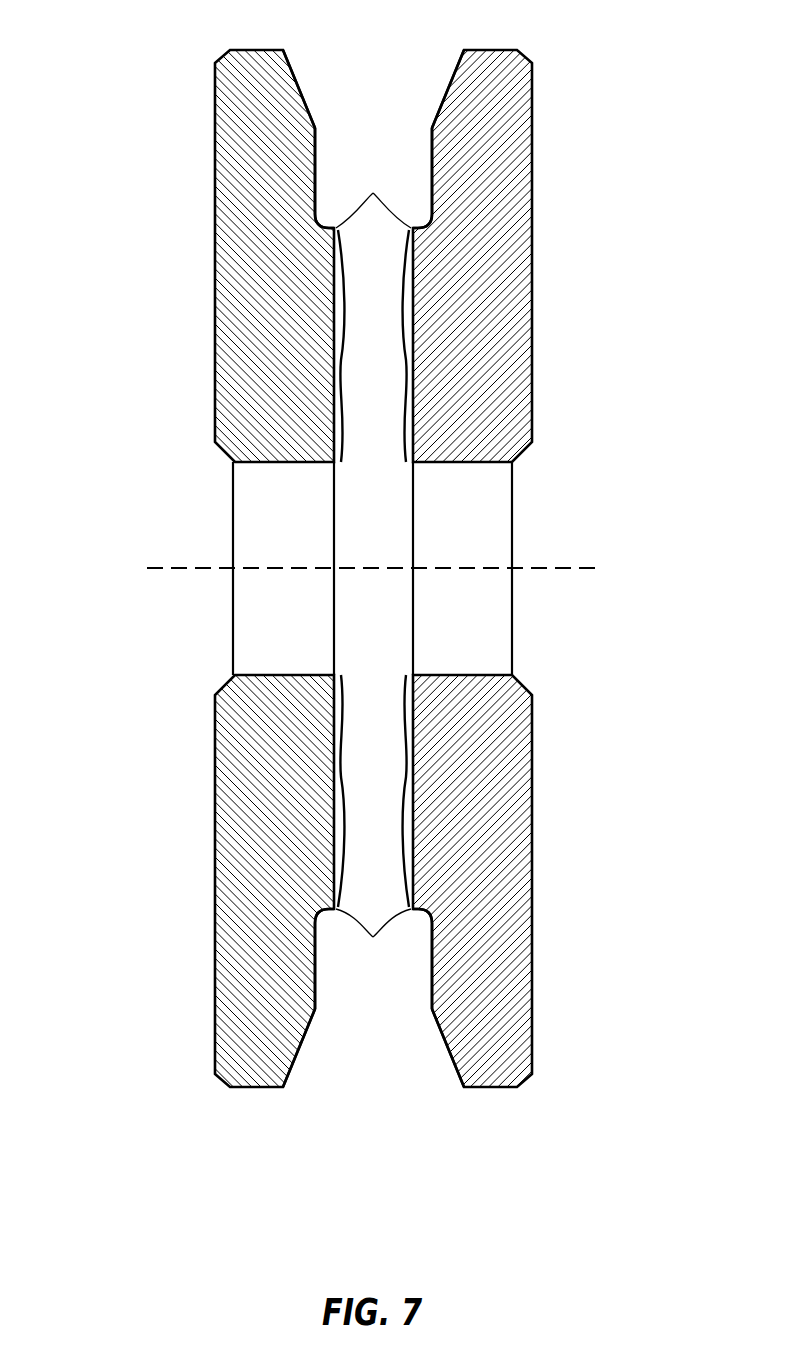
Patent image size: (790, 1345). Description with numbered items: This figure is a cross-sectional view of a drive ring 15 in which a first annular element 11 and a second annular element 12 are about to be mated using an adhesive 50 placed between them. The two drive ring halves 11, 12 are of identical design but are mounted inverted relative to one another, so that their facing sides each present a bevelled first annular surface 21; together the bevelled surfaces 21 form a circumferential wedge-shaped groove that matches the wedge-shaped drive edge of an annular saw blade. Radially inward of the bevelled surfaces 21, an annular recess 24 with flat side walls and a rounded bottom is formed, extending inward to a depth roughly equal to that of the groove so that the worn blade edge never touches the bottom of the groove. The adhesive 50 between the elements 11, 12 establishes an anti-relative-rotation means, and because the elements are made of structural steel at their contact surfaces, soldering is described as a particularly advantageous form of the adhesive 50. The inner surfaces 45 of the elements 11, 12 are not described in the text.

The drive ring 15 is at (120, 210).
The first annular element 11 is at (228, 250).
The second annular element 12 is at (519, 250).
The first annular surface 21 is at (306, 82).
The annular recess 24 is at (326, 184).
The sealing surface 45 is at (340, 466).
The adhesive 50 is at (373, 570).